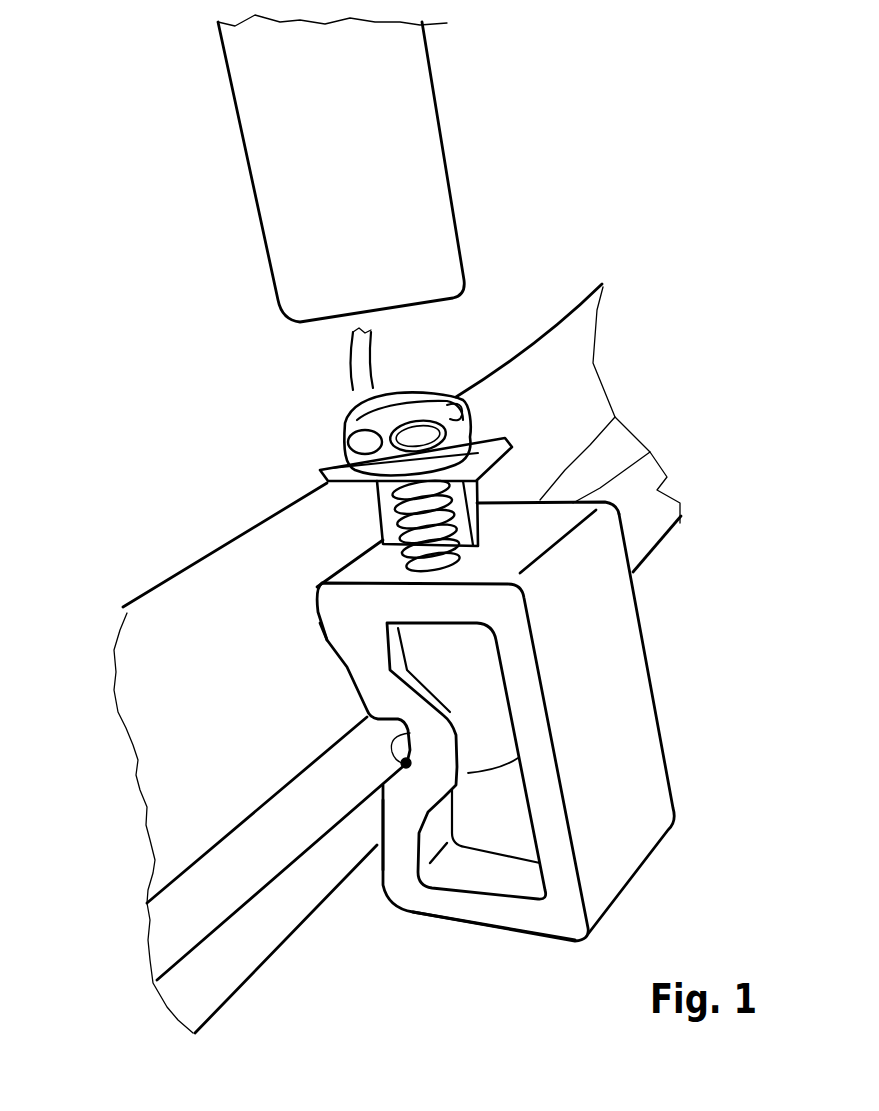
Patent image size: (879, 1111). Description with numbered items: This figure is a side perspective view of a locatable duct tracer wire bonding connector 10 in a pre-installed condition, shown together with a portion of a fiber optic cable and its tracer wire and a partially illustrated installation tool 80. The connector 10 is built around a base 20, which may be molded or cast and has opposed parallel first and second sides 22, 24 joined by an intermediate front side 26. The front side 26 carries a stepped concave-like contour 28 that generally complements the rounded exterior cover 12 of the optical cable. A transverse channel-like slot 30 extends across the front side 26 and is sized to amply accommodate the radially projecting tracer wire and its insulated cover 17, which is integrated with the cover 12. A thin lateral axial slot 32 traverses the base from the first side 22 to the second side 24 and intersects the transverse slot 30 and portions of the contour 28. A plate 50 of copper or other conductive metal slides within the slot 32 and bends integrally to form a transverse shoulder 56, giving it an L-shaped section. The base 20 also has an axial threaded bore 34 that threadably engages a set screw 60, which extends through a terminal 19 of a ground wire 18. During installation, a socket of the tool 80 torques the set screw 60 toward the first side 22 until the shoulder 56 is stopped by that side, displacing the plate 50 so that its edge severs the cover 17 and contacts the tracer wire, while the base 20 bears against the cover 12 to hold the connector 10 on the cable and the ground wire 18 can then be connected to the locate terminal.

The bonding connector 10 is at (700, 655).
The exterior cover 12 is at (182, 615).
The insulated cover 17 is at (243, 873).
The ground wire 18 is at (377, 357).
The terminal 19 is at (475, 437).
The base 20 is at (645, 778).
The first side 22 is at (557, 523).
The second side 24 is at (520, 937).
The front side 26 is at (347, 679).
The stepped concave-like contour 28 is at (383, 822).
The transverse channel-like slot 30 is at (407, 763).
The lateral axial slot 32 is at (483, 528).
The axial threaded bore 34 is at (470, 551).
The plate 50 is at (390, 513).
The transverse shoulder 56 is at (340, 465).
The set screw 60 is at (387, 543).
The installation tool 80 is at (403, 123).